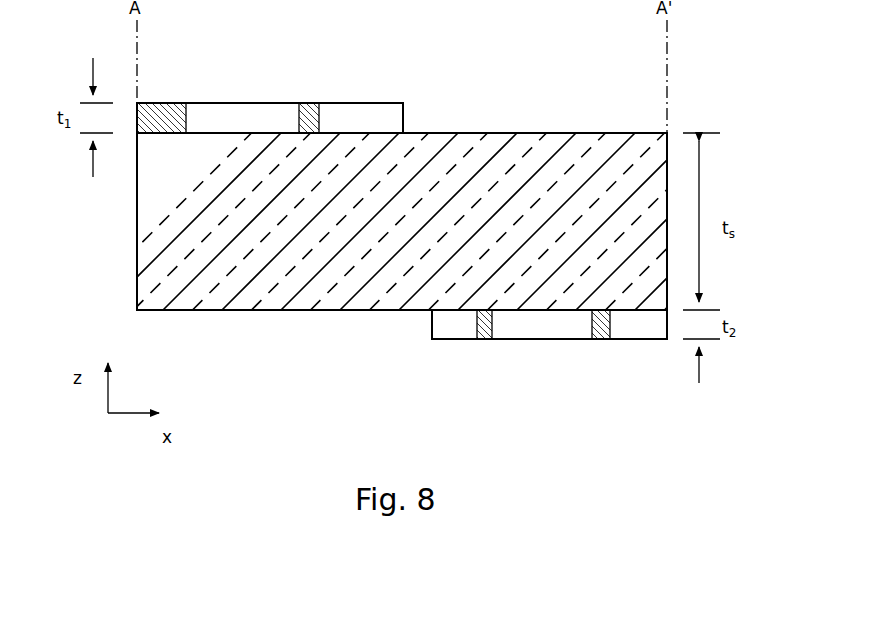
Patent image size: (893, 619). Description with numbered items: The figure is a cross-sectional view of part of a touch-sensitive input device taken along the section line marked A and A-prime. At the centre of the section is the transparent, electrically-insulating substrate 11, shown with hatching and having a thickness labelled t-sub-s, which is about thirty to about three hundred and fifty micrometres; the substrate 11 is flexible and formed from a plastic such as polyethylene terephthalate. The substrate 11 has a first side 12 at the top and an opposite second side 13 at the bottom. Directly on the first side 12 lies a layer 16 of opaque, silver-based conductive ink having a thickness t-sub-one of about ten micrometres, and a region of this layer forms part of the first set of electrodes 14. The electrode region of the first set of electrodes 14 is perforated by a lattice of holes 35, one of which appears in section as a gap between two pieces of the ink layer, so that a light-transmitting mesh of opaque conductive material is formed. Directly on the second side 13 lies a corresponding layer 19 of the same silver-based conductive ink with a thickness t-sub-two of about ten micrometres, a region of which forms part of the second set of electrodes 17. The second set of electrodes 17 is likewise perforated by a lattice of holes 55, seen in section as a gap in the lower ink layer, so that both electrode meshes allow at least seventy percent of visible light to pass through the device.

The substrate 11 is at (146, 229).
The first side 12 is at (531, 125).
The second side 13 is at (268, 318).
The first set of electrodes 14 is at (348, 76).
The layer 16 is at (403, 117).
The second set of electrodes 17 is at (447, 362).
The layer 19 is at (432, 326).
The holes 35 is at (300, 88).
The holes 55 is at (592, 350).